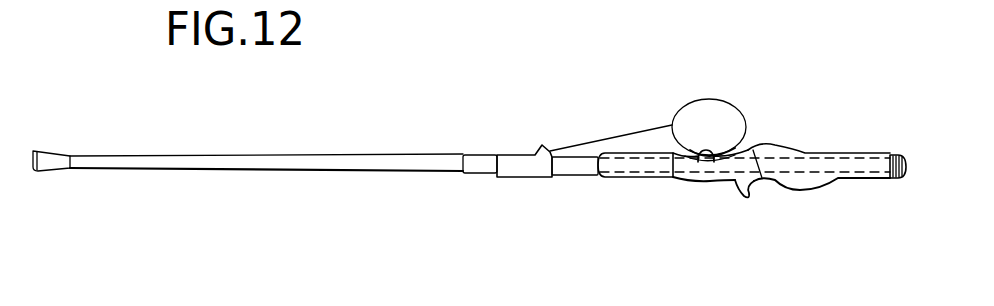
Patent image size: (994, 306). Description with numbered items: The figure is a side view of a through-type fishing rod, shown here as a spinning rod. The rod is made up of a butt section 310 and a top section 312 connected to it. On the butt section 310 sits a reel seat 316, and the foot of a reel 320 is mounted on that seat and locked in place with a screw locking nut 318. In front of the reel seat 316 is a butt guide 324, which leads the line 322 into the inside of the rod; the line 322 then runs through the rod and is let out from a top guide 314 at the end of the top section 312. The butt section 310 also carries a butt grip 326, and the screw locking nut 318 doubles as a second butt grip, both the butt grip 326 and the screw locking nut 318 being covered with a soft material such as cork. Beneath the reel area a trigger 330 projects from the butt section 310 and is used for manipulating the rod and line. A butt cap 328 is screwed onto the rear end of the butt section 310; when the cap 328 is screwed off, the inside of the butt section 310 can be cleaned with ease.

The butt section 310 is at (575, 176).
The top section 312 is at (183, 170).
The top guide 314 is at (33, 158).
The reel seat 316 is at (706, 163).
The screw locking nut 318 is at (648, 179).
The reel 320 is at (705, 100).
The line 322 is at (603, 136).
The butt guide 324 is at (520, 160).
The butt grip 326 is at (815, 188).
The butt cap 328 is at (896, 154).
The trigger 330 is at (744, 198).